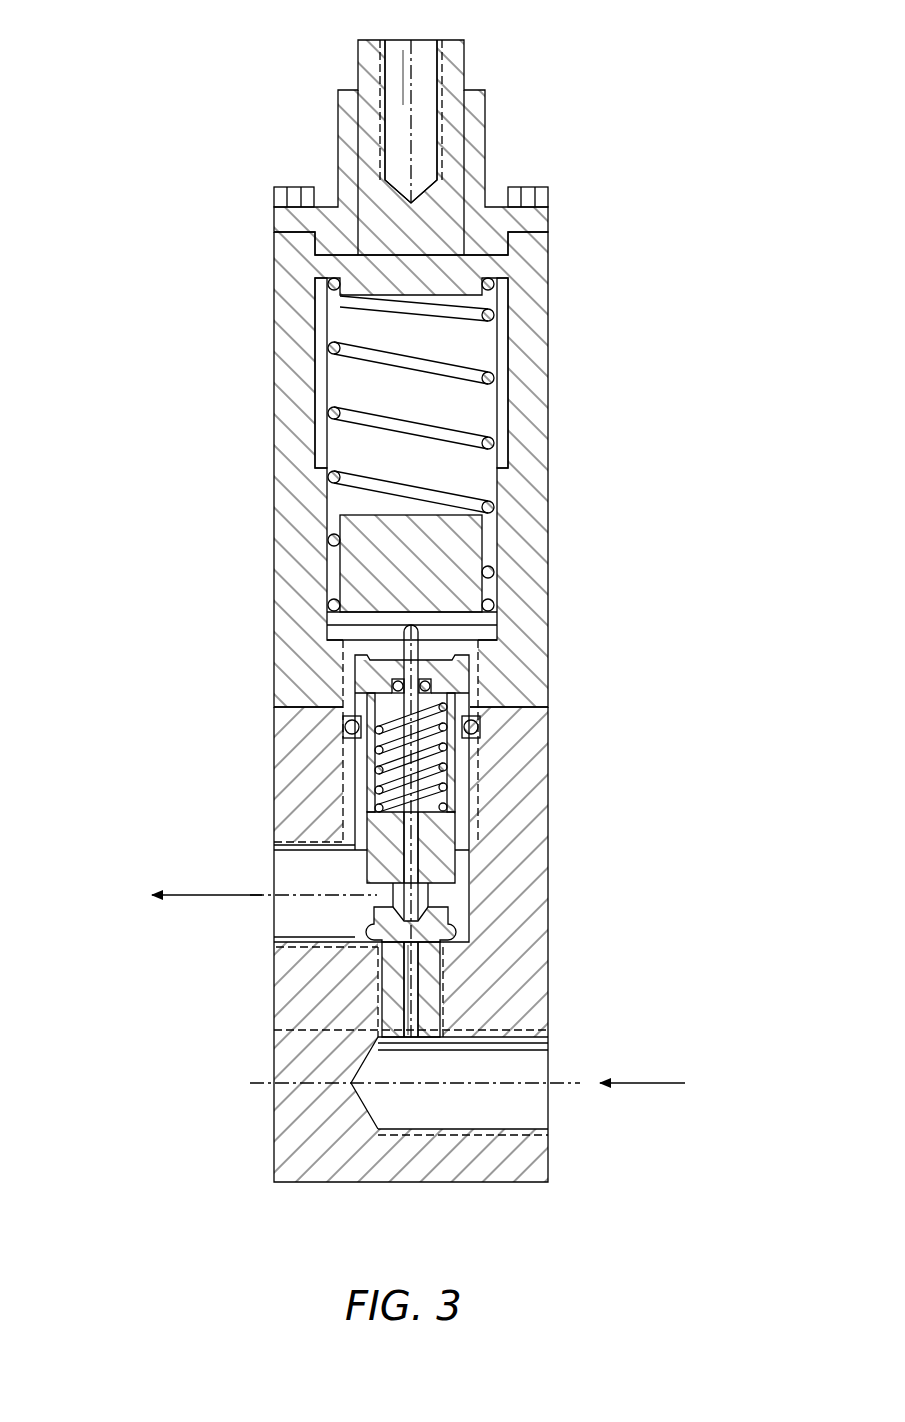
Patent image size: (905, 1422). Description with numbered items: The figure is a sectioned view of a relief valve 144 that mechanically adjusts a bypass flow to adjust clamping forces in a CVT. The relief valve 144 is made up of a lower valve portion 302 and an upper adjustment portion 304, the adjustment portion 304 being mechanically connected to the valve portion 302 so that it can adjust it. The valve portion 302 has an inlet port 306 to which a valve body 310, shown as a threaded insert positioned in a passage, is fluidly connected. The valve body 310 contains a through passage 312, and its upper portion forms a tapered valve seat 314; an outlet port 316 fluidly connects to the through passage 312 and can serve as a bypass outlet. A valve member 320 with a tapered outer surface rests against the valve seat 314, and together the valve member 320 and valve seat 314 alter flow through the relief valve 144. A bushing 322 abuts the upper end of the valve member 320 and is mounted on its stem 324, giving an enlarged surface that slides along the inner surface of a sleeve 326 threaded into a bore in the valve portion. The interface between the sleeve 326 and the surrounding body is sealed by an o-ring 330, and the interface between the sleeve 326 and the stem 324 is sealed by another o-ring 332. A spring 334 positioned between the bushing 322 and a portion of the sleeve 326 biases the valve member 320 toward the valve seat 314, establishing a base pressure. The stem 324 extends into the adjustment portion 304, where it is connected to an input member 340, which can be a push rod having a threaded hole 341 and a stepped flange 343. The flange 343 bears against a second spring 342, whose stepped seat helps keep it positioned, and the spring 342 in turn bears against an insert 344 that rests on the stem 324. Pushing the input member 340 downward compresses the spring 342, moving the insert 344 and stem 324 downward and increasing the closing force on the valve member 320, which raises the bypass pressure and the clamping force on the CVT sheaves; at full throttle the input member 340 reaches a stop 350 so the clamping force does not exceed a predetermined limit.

The relief valve 144 is at (157, 300).
The valve portion 302 is at (253, 772).
The adjustment portion 304 is at (253, 630).
The inlet port 306 is at (572, 1062).
The valve body 310 is at (428, 989).
The through passage 312 is at (410, 1002).
The valve seat 314 is at (458, 918).
The outlet port 316 is at (260, 867).
The valve member 320 is at (418, 895).
The bushing 322 is at (472, 840).
The stem 324 is at (412, 648).
The sleeve 326 is at (360, 800).
The o-ring 330 is at (483, 726).
The o-ring 332 is at (393, 683).
The spring 334 is at (455, 787).
The input member 340 is at (417, 40).
The threaded hole 341 is at (423, 103).
The spring 342 is at (496, 316).
The flange 343 is at (495, 268).
The insert 344 is at (467, 553).
The stop 350 is at (322, 468).